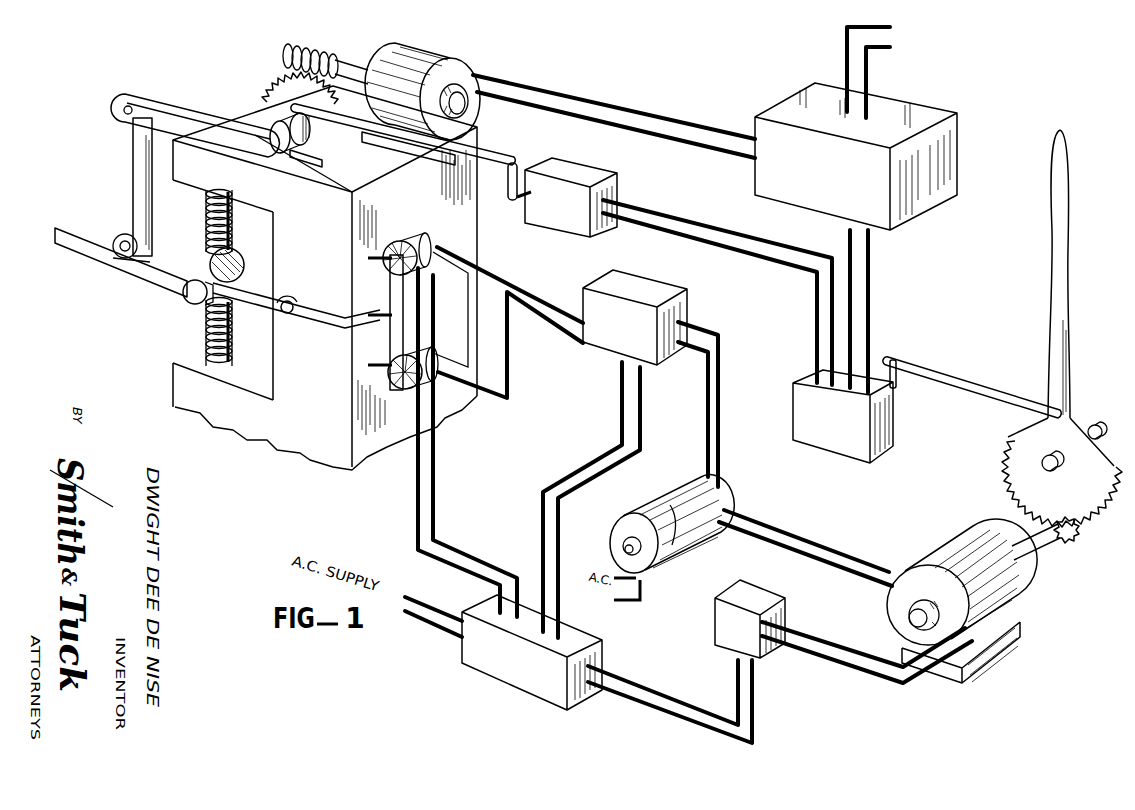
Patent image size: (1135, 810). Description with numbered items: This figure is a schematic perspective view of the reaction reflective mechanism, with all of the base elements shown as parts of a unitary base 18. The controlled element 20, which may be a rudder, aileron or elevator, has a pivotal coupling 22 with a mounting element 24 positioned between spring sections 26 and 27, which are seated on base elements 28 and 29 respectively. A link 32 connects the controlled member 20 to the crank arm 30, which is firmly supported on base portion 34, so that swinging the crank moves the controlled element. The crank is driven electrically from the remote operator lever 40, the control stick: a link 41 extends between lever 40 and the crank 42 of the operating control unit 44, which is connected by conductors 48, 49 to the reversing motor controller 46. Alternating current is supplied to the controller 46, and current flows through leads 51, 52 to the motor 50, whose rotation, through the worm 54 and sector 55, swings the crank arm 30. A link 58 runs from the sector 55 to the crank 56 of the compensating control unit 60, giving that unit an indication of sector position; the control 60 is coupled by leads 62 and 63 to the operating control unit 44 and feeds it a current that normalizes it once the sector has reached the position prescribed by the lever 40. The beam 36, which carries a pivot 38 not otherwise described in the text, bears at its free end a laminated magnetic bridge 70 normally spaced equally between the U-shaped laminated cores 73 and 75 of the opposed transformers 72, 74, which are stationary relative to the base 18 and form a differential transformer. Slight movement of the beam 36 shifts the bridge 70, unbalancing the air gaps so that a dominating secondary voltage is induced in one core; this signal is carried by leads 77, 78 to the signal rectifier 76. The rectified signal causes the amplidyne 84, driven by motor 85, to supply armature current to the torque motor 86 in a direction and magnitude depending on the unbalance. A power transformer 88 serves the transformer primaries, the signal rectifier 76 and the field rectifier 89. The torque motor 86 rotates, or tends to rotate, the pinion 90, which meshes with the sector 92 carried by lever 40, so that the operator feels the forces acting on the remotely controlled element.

The unitary base 18 is at (303, 447).
The controlled element 20 is at (81, 256).
The pivotal coupling 22 is at (186, 299).
The mounting element 24 is at (237, 262).
The spring section 26 is at (207, 212).
The spring section 27 is at (238, 356).
The base element 28 is at (209, 184).
The base element 29 is at (207, 409).
The crank arm 30 is at (172, 112).
The link 32 is at (134, 163).
The base portion 34 is at (291, 158).
The beam 36 is at (262, 296).
The pivot hole 38 is at (291, 315).
The remote operator lever 40 is at (1072, 372).
The link 41 is at (1003, 386).
The crank 42 is at (900, 379).
The operating control unit 44 is at (902, 432).
The reversing motor controller 46 is at (909, 180).
The conductor 48 is at (853, 301).
The conductor 49 is at (871, 323).
The motor 50 is at (403, 94).
The lead 51 is at (567, 95).
The lead 52 is at (633, 112).
The worm 54 is at (313, 50).
The sector 55 is at (276, 92).
The crank 56 is at (513, 186).
The link 58 is at (488, 151).
The compensating control unit 60 is at (619, 192).
The lead 62 is at (690, 223).
The lead 63 is at (722, 242).
The laminated magnetic bridge 70 is at (392, 338).
The transformer 72 is at (403, 241).
The core 73 is at (392, 292).
The transformer 74 is at (440, 384).
The core 75 is at (385, 377).
The signal rectifier 76 is at (627, 300).
The lead 77 is at (515, 276).
The lead 78 is at (538, 305).
The amplidyne 84 is at (701, 532).
The motor 85 is at (668, 556).
The torque motor 86 is at (983, 577).
The power transformer 88 is at (499, 676).
The field rectifier 89 is at (735, 597).
The pinion 90 is at (1069, 534).
The sector 92 is at (1067, 498).